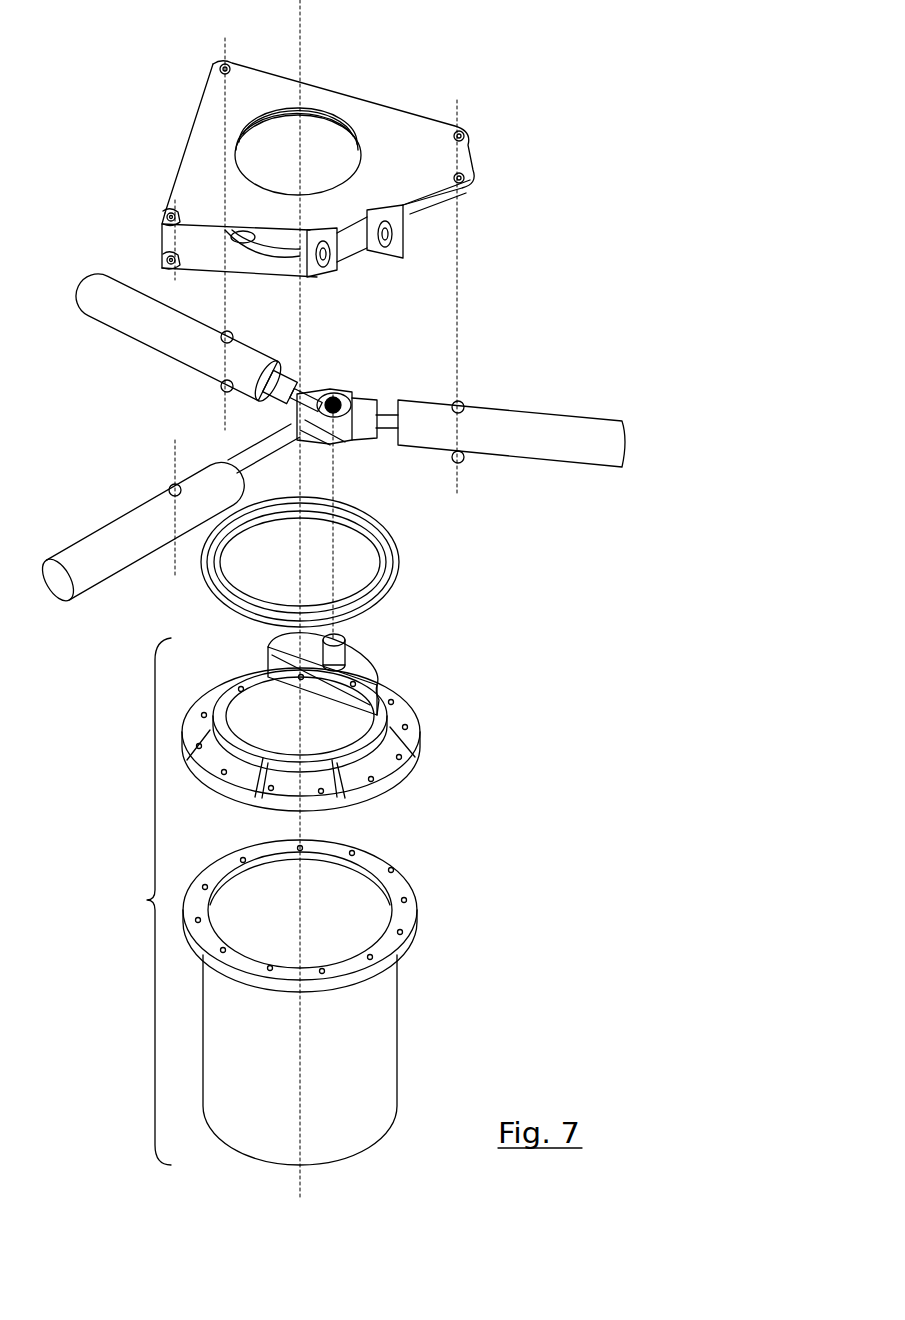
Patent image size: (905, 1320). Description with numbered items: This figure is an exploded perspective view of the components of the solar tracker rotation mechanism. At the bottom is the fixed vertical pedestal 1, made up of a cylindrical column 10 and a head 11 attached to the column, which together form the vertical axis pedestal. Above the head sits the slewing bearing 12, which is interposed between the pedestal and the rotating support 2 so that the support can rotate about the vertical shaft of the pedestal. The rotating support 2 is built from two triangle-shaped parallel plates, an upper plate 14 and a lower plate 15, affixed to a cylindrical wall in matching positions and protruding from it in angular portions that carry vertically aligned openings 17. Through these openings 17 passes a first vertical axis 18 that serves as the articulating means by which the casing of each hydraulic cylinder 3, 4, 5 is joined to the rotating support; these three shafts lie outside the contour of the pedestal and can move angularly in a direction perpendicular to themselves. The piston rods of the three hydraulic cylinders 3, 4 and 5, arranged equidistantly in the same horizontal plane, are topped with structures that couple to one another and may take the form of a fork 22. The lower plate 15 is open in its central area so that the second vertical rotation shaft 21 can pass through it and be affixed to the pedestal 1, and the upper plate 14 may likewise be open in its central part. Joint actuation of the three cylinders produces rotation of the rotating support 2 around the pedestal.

The vertical pedestal 1 is at (144, 901).
The rotating support 2 is at (385, 82).
The hydraulic cylinder 3 is at (585, 437).
The hydraulic cylinder 4 is at (122, 318).
The hydraulic cylinder 5 is at (83, 575).
The cylindrical column 10 is at (360, 1052).
The head 11 is at (383, 787).
The slewing bearing 12 is at (398, 577).
The upper plate 14 is at (416, 165).
The lower plate 15 is at (412, 216).
The openings 17 is at (215, 66).
The first vertical axis 18 is at (220, 339).
The second vertical rotation shaft 21 is at (380, 652).
The fork 22 is at (362, 395).